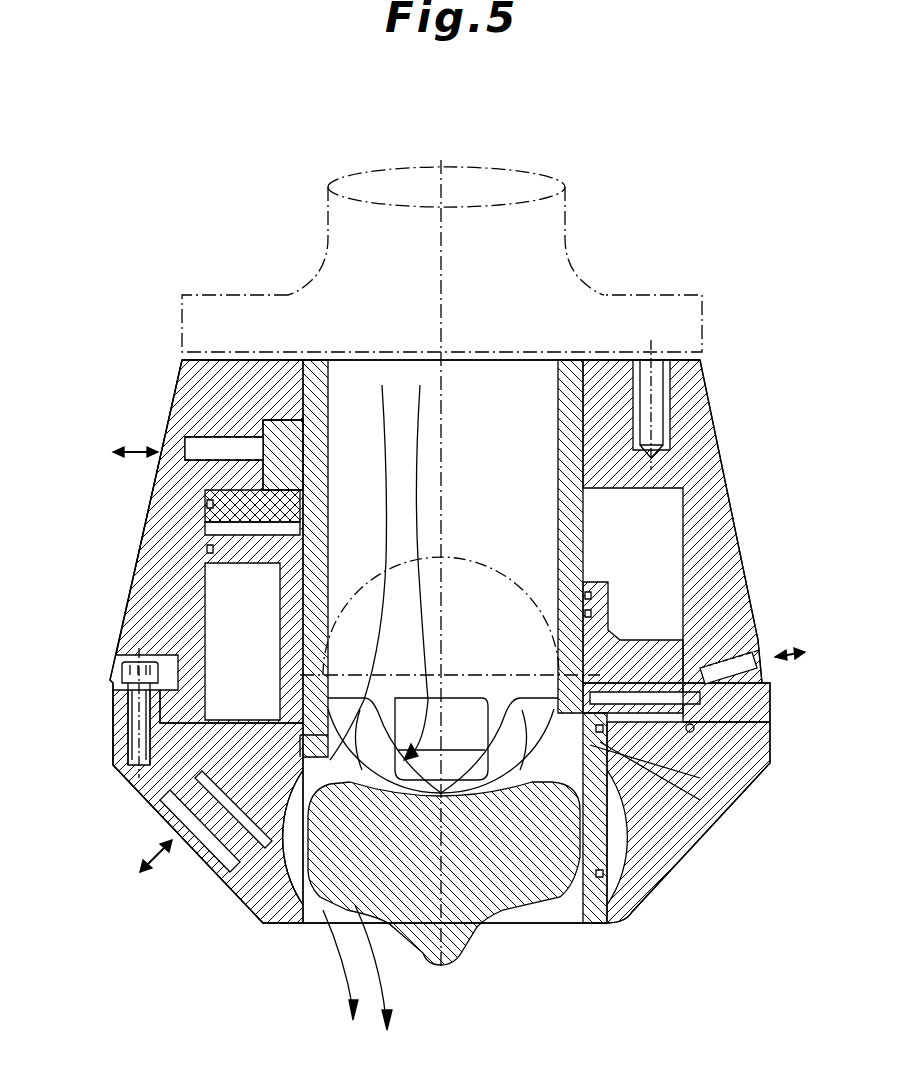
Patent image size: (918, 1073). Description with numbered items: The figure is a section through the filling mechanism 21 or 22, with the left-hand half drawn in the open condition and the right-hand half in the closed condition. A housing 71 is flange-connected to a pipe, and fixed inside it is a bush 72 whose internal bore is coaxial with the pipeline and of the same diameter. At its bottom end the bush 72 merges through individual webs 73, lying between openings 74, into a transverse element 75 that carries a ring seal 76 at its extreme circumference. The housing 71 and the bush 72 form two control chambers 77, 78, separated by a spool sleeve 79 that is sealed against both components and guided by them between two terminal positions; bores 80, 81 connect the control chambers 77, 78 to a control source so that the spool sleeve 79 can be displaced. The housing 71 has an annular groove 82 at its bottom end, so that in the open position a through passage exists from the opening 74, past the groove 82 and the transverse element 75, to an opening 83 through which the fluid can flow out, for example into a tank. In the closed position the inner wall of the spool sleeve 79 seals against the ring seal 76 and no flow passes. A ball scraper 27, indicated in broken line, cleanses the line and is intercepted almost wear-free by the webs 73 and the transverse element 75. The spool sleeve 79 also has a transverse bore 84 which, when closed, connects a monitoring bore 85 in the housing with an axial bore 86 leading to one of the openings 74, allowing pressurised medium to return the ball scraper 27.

The filling mechanism 21 is at (400, 231).
The filling mechanism 22 is at (268, 262).
The ball scraper 27 is at (478, 565).
The housing 71 is at (718, 437).
The bush 72 is at (322, 520).
The webs 73 is at (490, 707).
The openings 74 is at (452, 700).
The transverse element 75 is at (458, 940).
The ring seal 76 is at (313, 845).
The control chamber 77 is at (265, 470).
The control chamber 78 is at (220, 600).
The spool sleeve 79 is at (605, 582).
The bore 80 is at (185, 450).
The bore 81 is at (168, 820).
The annular groove 82 is at (645, 885).
The opening 83 is at (538, 915).
The transverse bore 84 is at (637, 690).
The monitoring bore 85 is at (752, 670).
The axial bore 86 is at (700, 778).